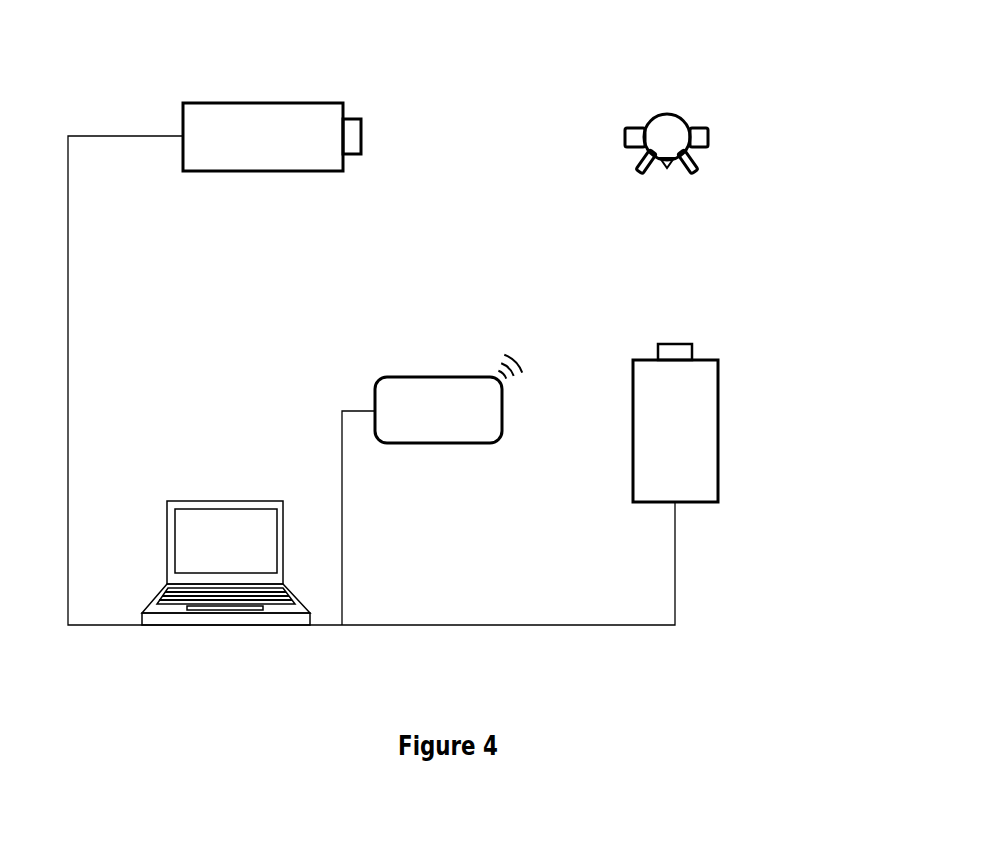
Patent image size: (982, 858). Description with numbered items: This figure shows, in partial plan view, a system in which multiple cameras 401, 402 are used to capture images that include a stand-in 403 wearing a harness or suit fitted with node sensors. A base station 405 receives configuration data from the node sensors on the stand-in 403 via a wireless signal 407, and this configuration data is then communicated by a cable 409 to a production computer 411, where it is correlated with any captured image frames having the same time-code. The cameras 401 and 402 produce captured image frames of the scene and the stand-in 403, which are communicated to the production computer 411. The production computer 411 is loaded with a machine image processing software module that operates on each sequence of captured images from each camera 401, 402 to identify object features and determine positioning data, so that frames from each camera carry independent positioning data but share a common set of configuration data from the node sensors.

The camera 401 is at (343, 93).
The camera 402 is at (718, 430).
The stand-in 403 is at (725, 111).
The base station 405 is at (483, 452).
The wireless signal 407 is at (535, 385).
The cable 409 is at (347, 468).
The production computer 411 is at (152, 634).